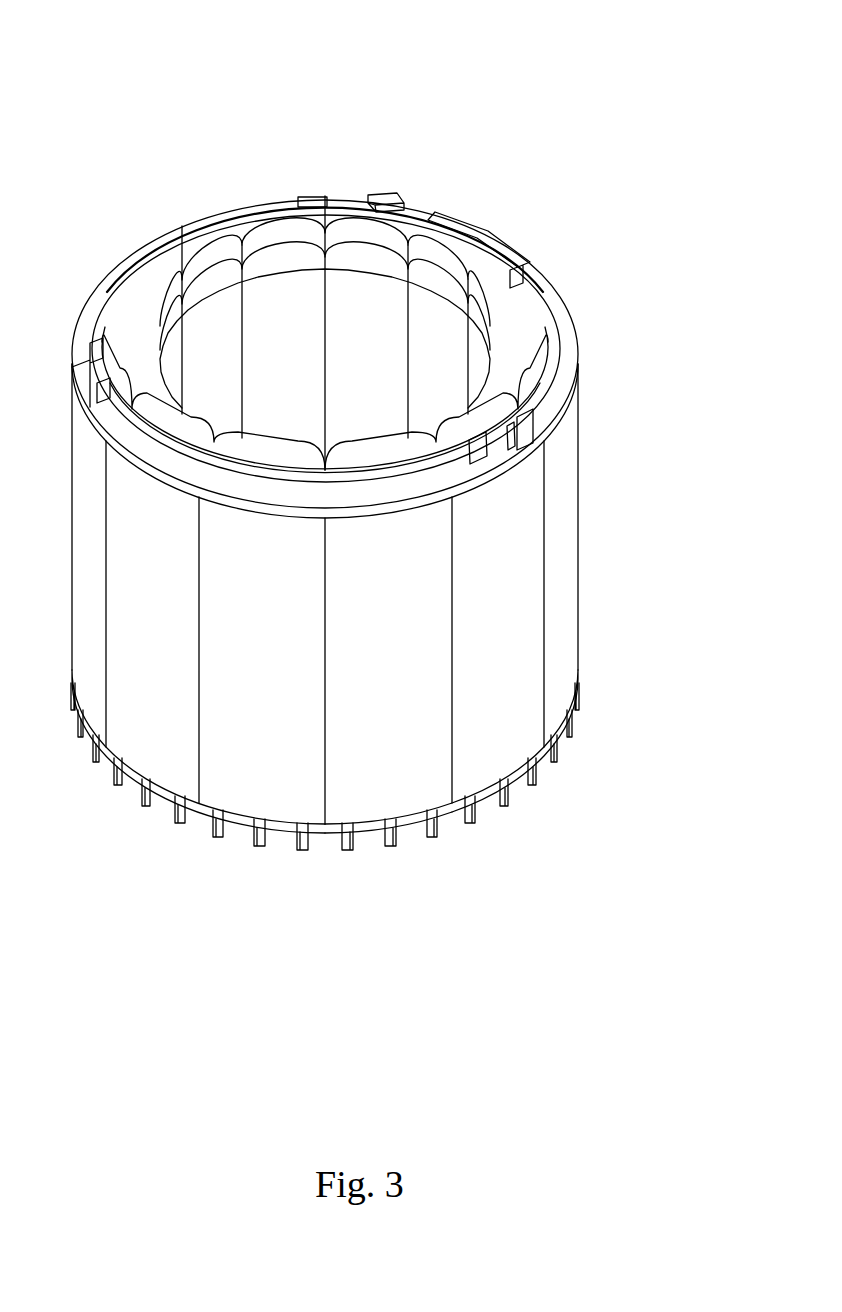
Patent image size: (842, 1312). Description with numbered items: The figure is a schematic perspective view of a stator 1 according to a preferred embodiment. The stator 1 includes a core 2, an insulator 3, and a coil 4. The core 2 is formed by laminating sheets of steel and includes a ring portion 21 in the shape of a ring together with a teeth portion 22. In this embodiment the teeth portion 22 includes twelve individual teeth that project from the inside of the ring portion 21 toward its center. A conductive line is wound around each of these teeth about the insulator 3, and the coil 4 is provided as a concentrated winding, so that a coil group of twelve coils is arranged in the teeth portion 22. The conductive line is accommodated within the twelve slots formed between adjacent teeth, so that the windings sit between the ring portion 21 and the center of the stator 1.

The stator 1 is at (494, 90).
The core 2 is at (286, 768).
The ring portion 21 is at (397, 780).
The teeth portion 22 is at (287, 308).
The insulator 3 is at (459, 457).
The coil 4 is at (183, 226).